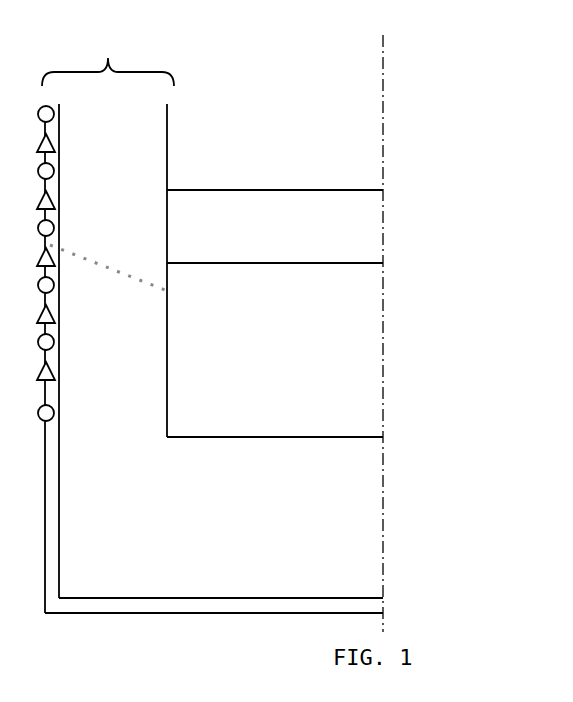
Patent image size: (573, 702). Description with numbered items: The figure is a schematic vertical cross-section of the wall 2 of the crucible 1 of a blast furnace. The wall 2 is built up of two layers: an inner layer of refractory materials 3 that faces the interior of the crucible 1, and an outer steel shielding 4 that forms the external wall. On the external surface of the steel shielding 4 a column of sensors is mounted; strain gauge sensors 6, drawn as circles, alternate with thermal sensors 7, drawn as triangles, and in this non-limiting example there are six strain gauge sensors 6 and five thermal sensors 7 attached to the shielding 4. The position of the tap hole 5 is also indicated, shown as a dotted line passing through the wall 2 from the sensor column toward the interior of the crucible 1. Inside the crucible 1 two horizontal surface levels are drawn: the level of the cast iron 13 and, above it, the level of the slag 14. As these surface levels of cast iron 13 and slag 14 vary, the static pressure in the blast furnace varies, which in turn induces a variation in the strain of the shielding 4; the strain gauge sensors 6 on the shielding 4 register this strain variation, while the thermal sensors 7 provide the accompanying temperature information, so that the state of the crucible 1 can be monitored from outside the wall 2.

The crucible 1 is at (340, 363).
The wall 2 is at (108, 56).
The refractory materials 3 is at (132, 383).
The steel shielding 4 is at (51, 582).
The tap hole 5 is at (130, 273).
The strain gauge sensors 6 is at (57, 166).
The thermal sensors 7 is at (58, 204).
The cast iron 13 is at (315, 263).
The slag 14 is at (288, 190).